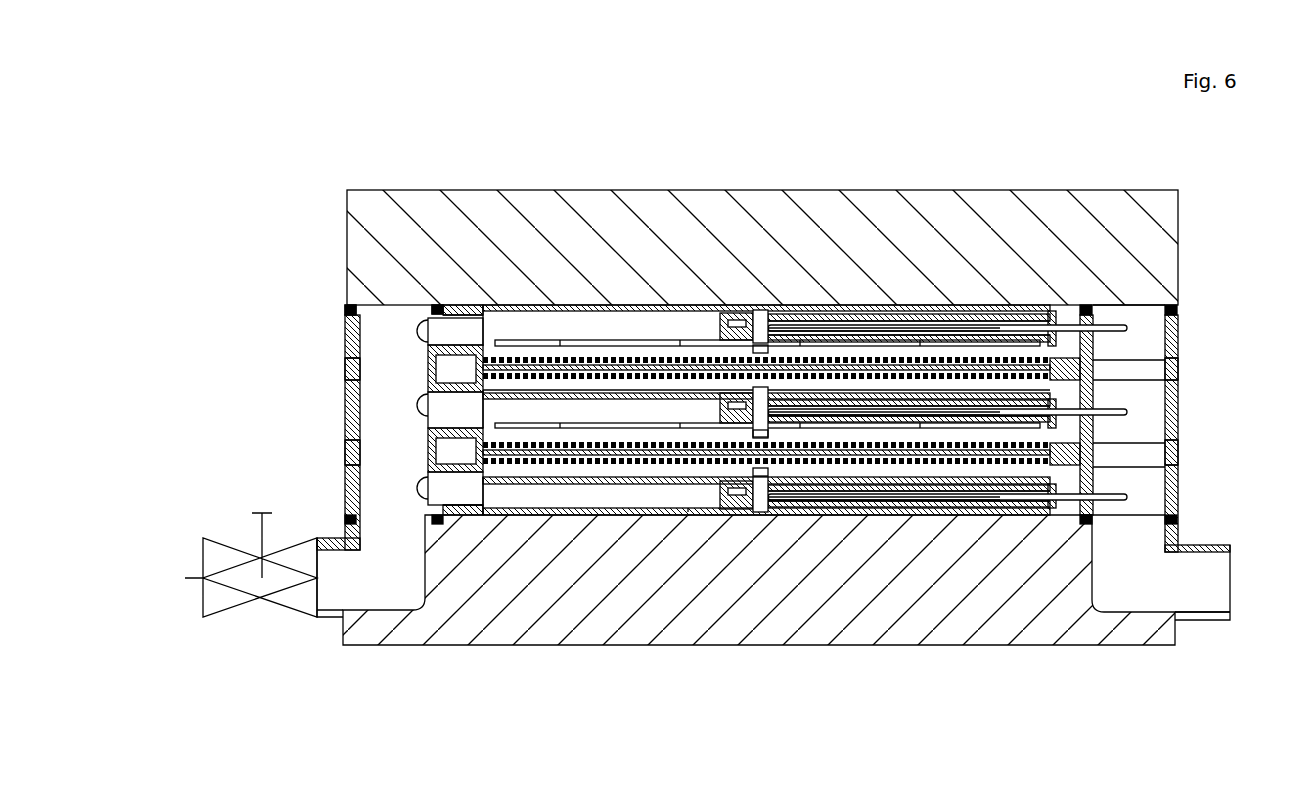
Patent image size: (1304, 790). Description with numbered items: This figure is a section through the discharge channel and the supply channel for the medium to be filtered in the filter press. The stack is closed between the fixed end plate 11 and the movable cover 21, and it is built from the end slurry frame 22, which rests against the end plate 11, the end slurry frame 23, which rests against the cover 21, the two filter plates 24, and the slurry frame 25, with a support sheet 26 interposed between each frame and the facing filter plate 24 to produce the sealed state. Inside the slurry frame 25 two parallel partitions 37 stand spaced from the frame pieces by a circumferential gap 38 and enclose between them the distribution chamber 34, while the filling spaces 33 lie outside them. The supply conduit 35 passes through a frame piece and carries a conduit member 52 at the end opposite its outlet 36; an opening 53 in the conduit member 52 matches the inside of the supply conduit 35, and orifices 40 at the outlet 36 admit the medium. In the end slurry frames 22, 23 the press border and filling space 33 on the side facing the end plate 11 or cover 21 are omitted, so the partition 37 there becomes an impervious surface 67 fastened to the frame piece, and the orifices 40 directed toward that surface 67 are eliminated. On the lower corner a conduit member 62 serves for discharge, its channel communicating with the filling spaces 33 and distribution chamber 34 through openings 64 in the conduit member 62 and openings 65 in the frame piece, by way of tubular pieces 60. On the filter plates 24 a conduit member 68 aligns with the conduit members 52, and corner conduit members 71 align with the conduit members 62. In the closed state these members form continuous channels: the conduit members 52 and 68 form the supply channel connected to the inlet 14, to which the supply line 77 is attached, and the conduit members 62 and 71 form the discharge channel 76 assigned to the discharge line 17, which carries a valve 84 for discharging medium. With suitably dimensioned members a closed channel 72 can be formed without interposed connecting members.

The fixed end plate 11 is at (637, 630).
The inlet 14 is at (1180, 600).
The discharge line 17 is at (335, 590).
The movable cover 21 is at (388, 212).
The end slurry frame 22 is at (688, 520).
The end slurry frame 23 is at (572, 330).
The filter plate 24 is at (808, 412).
The slurry frame 25 is at (790, 490).
The support sheet 26 is at (688, 497).
The filling space 33 is at (628, 468).
The distribution chamber 34 is at (688, 497).
The supply conduit 35 is at (931, 390).
The outlet 36 is at (745, 405).
The partition 37 is at (748, 297).
The gap 38 is at (528, 300).
The orifice 40 is at (860, 392).
The conduit member 52 is at (1178, 318).
The opening 53 is at (1058, 308).
The tubular piece 60 is at (470, 333).
The conduit member 62 is at (345, 320).
The opening 64 is at (443, 305).
The opening 65 is at (492, 333).
The impervious surface 67 is at (762, 315).
The conduit member 68 is at (1178, 368).
The conduit member 71 is at (345, 368).
The closed channel 72 is at (1185, 395).
The discharge channel 76 is at (335, 395).
The supply line 77 is at (1225, 620).
The valve 84 is at (220, 600).